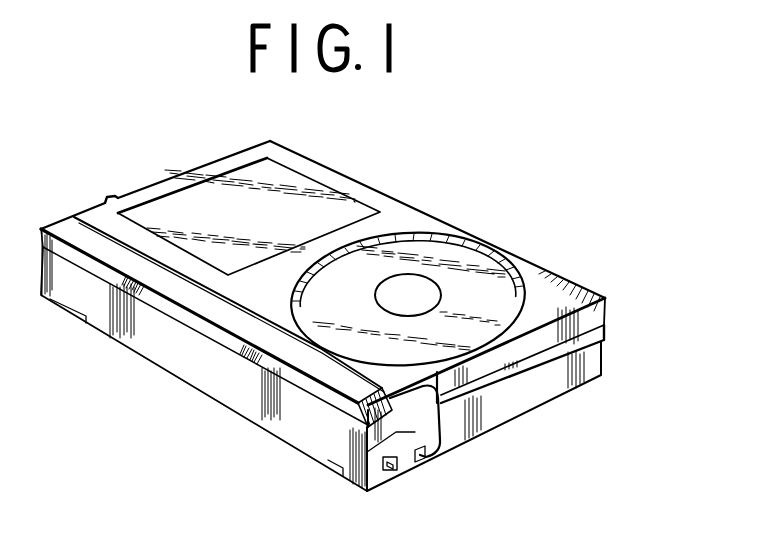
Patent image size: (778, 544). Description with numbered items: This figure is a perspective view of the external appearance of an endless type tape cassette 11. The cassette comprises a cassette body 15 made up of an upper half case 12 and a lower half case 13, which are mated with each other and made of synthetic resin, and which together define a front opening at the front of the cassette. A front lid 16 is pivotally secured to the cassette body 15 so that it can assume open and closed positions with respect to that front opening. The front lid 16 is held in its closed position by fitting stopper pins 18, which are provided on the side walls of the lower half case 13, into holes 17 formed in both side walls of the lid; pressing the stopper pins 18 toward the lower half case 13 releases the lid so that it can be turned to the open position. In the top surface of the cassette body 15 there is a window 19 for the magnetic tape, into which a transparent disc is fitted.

The endless type tape cassette 11 is at (403, 217).
The upper half case 12 is at (597, 316).
The lower half case 13 is at (510, 408).
The cassette body 15 is at (364, 360).
The front lid 16 is at (207, 370).
The holes 17 is at (392, 470).
The stopper pins 18 is at (393, 468).
The window 19 is at (477, 290).